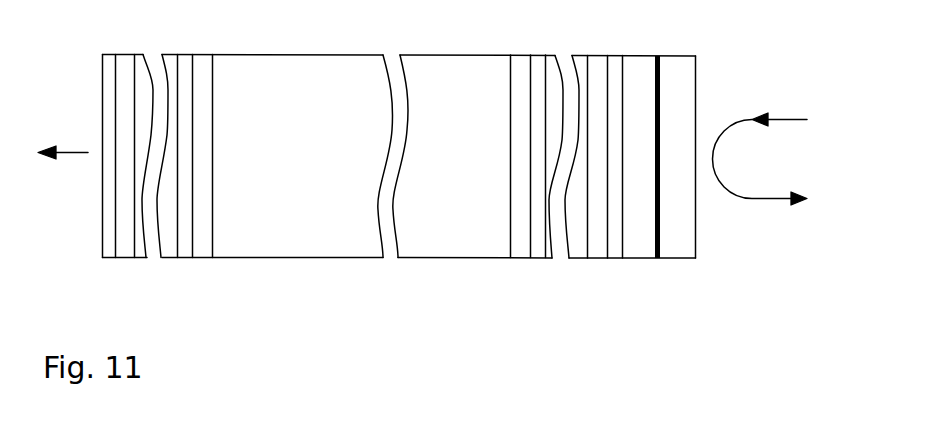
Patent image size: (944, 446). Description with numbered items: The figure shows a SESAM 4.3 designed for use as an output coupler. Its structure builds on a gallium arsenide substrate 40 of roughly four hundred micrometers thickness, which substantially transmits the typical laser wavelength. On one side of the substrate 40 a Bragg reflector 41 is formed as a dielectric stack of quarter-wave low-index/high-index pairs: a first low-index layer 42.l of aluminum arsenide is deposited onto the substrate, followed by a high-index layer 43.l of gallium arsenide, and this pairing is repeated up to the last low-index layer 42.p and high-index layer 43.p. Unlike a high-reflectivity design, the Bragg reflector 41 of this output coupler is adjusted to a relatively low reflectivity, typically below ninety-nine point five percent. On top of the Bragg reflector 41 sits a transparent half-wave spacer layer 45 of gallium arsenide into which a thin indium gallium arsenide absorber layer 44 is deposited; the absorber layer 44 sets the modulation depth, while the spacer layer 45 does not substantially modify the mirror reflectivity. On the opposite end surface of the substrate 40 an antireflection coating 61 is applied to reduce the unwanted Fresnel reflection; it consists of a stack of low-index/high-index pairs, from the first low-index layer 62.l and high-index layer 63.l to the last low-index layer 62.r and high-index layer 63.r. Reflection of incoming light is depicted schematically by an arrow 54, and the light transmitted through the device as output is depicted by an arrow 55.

The substrate 40 is at (337, 77).
The antireflection coating 61 is at (212, 50).
The low-index layer 62.r is at (127, 258).
The high-index layer 63.r is at (108, 258).
The low-index layer 62.l is at (203, 258).
The high-index layer 63.l is at (184, 258).
The Bragg reflector 41 is at (622, 50).
The quarter wave layer of low-index material 42.l is at (522, 248).
The high-index layer 43.l is at (537, 248).
The low-index layer 42.p is at (595, 248).
The high-index layer 43.p is at (613, 250).
The absorber layer 44 is at (655, 77).
The transparent half-wave spacer layer 45 is at (677, 75).
The arrow 54 is at (765, 202).
The arrow 55 is at (70, 155).
The SESAM 4.3 is at (311, 320).